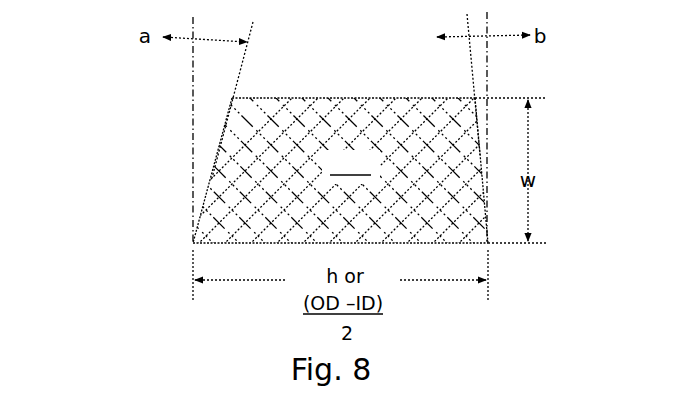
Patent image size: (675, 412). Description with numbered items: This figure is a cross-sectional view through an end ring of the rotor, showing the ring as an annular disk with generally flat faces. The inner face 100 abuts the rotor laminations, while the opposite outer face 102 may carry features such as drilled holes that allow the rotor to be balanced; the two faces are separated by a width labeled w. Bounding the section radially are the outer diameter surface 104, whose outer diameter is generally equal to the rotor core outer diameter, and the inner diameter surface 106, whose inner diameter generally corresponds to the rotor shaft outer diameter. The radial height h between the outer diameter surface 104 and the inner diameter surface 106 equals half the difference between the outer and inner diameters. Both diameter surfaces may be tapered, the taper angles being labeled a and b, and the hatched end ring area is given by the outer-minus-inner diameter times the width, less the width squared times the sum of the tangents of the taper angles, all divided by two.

The inner face 100 is at (387, 243).
The outer face 102 is at (323, 98).
The outer diameter surface 104 is at (477, 168).
The inner diameter surface 106 is at (212, 178).